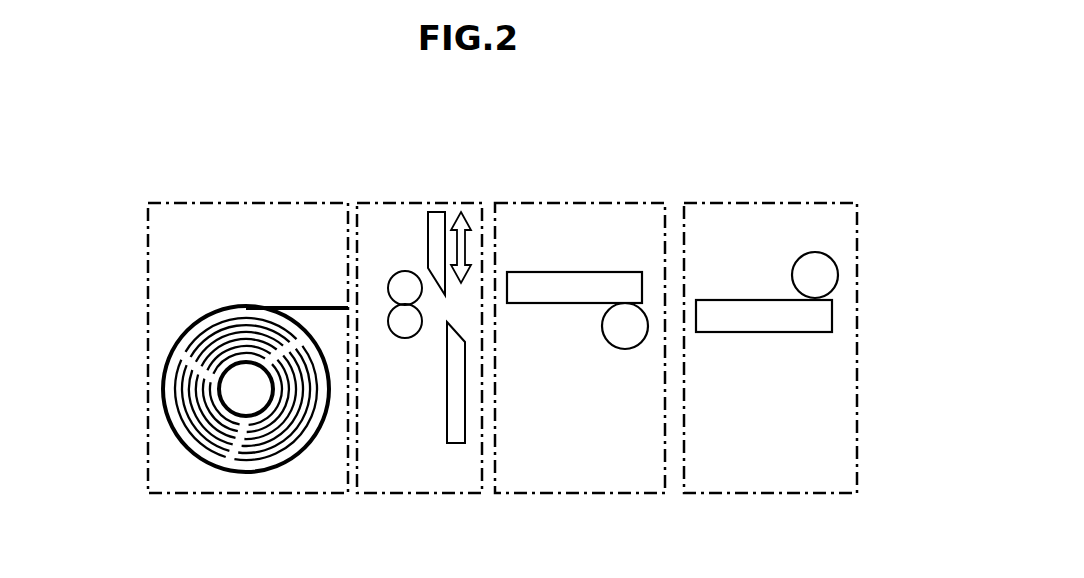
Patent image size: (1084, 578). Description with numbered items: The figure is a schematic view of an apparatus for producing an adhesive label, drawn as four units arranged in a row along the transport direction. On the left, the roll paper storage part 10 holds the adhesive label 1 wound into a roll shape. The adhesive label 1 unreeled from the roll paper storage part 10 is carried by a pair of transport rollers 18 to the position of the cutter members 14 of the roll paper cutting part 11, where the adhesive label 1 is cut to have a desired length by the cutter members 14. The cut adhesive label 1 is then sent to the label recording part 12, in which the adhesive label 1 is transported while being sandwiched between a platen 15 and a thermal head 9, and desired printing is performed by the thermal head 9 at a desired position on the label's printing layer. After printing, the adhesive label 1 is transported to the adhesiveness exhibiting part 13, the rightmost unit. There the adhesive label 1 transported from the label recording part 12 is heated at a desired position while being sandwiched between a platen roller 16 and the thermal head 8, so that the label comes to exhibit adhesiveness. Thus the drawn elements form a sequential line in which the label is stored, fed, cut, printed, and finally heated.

The adhesive label 1 is at (280, 307).
The thermal head 8 is at (818, 315).
The thermal head 9 is at (598, 278).
The roll paper storage part 10 is at (242, 202).
The roll paper cutting part 11 is at (395, 203).
The label recording part 12 is at (565, 202).
The adhesiveness exhibiting part 13 is at (757, 202).
The cutter members 14 is at (456, 360).
The platen 15 is at (623, 333).
The platen roller 16 is at (812, 267).
The transport rollers 18 is at (412, 287).